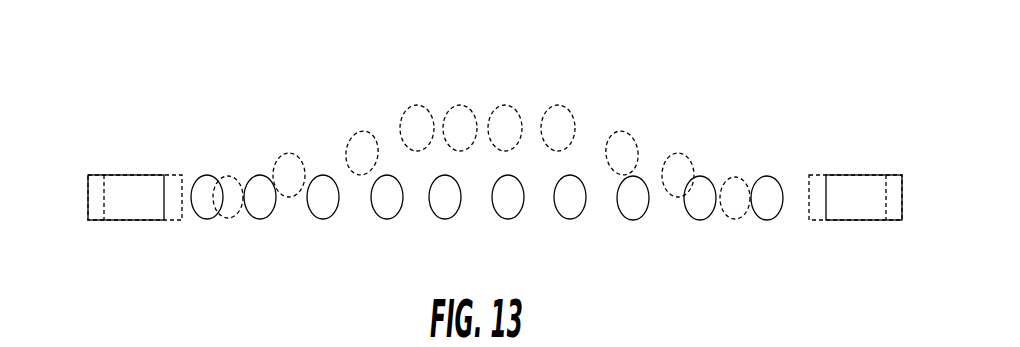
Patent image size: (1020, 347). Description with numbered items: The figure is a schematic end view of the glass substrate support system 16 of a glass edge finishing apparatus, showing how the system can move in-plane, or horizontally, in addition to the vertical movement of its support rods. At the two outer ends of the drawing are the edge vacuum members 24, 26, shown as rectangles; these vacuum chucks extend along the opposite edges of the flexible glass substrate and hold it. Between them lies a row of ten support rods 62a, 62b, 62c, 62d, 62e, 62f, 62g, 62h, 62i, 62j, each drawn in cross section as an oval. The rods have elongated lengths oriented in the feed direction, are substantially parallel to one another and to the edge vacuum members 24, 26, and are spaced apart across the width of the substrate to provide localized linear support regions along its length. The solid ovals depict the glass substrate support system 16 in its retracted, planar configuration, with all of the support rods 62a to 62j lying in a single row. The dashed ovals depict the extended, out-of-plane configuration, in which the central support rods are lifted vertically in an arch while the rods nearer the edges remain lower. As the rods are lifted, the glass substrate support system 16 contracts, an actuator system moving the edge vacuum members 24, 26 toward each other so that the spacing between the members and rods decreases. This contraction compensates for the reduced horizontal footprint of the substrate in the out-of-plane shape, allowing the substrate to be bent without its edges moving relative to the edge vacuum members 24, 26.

The glass substrate support system 16 is at (748, 105).
The edge vacuum member 24 is at (112, 231).
The edge vacuum member 26 is at (860, 232).
The support rod 62a is at (207, 219).
The support rod 62b is at (260, 219).
The support rod 62c is at (323, 219).
The support rod 62d is at (387, 219).
The support rod 62e is at (445, 219).
The support rod 62f is at (508, 219).
The support rod 62g is at (570, 219).
The support rod 62h is at (633, 220).
The support rod 62i is at (700, 220).
The support rod 62j is at (767, 220).